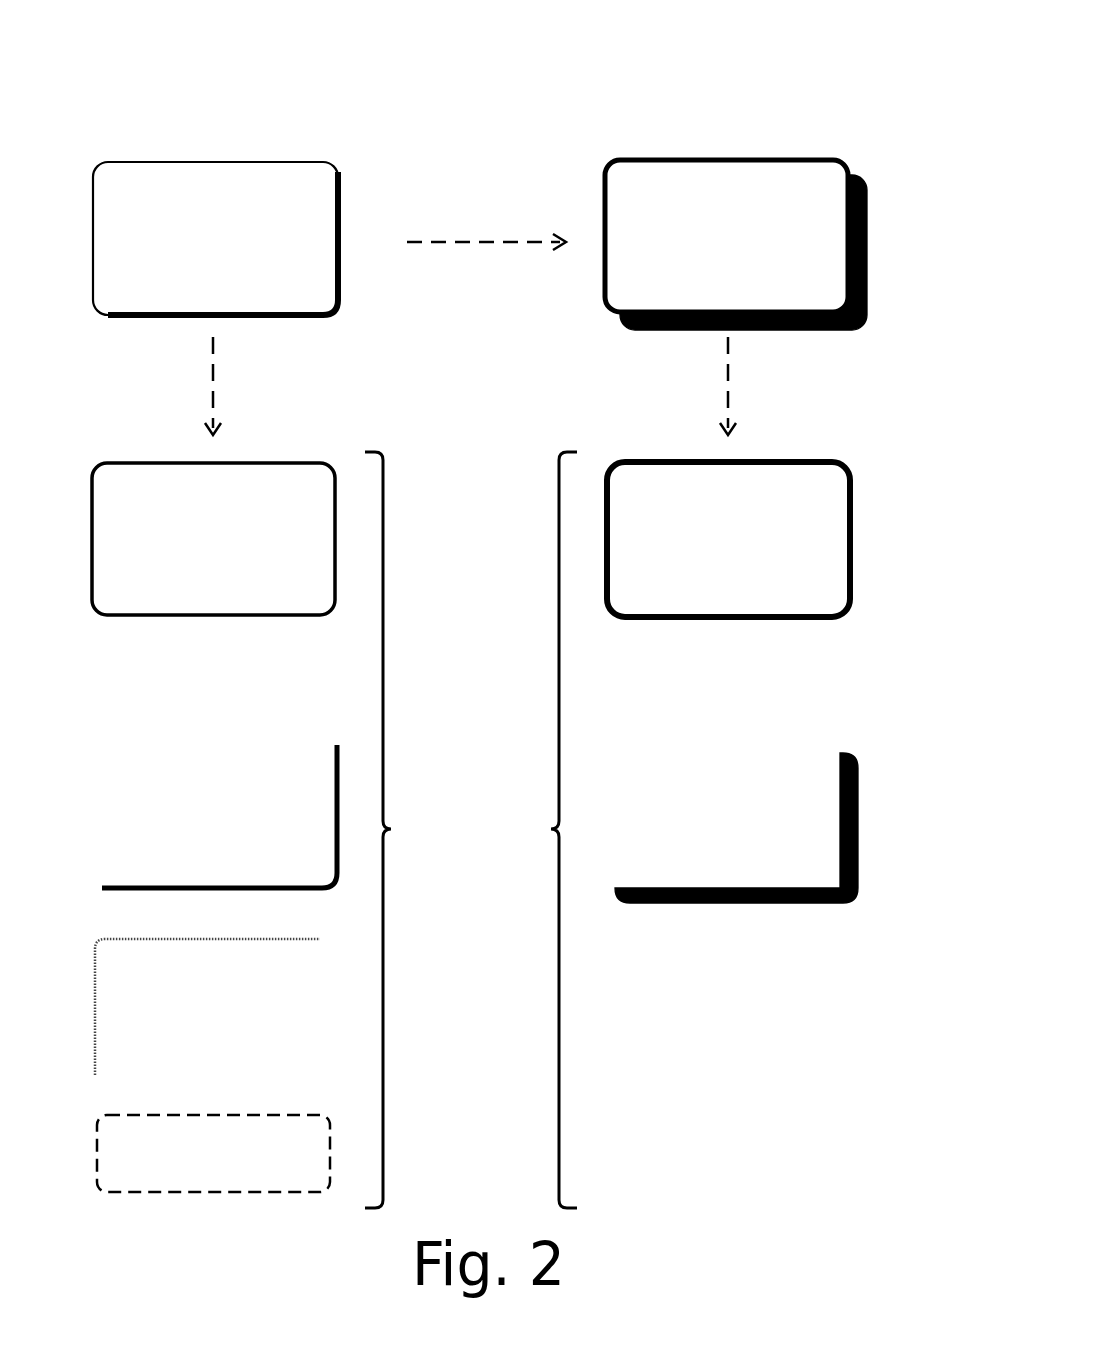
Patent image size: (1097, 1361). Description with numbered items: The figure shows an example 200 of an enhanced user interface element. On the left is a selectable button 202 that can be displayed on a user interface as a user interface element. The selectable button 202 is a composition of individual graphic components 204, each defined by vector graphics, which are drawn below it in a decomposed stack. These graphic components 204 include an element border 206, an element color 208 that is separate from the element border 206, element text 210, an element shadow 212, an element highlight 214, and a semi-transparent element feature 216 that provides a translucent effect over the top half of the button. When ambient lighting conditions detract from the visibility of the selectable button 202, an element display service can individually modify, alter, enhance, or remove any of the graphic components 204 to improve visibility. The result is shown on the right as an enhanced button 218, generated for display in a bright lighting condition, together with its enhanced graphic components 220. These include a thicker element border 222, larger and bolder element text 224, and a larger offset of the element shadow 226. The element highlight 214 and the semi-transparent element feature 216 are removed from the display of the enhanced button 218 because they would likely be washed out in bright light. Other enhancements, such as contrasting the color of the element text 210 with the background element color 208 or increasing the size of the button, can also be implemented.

The example 200 is at (770, 66).
The selectable button 202 is at (260, 160).
The graphic components 204 is at (393, 658).
The element border 206 is at (183, 463).
The element color 208 is at (275, 561).
The element text 210 is at (195, 685).
The element shadow 212 is at (300, 888).
The element highlight 214 is at (193, 939).
The semi-transparent element feature 216 is at (242, 1115).
The enhanced button 218 is at (790, 158).
The enhanced graphic components 220 is at (552, 532).
The thicker element border 222 is at (667, 462).
The larger and bolder element text 224 is at (697, 688).
The larger offset of the element shadow 226 is at (793, 888).